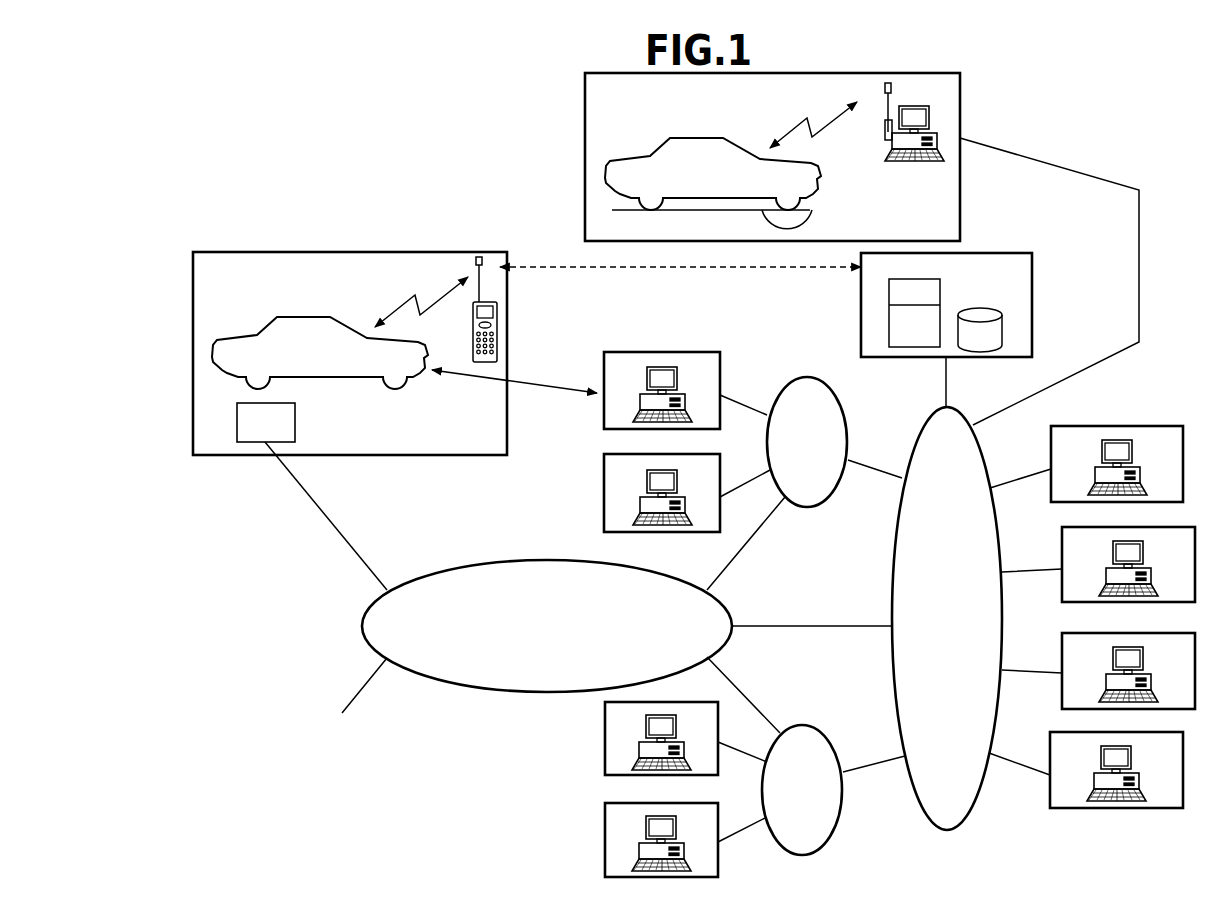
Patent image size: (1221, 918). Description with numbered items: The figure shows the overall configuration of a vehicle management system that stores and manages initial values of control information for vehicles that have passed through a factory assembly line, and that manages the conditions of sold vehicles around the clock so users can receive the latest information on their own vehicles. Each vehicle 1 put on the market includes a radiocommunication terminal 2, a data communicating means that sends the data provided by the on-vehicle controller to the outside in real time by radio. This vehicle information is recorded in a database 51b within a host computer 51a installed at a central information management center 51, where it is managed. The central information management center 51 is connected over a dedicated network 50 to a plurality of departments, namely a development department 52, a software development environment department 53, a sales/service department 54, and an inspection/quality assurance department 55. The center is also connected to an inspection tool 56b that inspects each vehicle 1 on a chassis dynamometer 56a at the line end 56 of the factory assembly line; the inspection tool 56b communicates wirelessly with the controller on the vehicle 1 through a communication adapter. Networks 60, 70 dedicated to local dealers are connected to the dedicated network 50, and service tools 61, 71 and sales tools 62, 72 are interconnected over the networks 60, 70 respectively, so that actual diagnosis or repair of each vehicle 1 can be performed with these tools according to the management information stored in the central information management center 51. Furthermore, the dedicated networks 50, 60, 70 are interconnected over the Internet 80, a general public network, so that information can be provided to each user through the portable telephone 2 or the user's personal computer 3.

The vehicle 1 is at (292, 317).
The radiocommunication terminal 2 is at (473, 330).
The user's personal computer 3 is at (295, 423).
The dedicated network 50 is at (928, 416).
The central information management center 51 is at (1032, 261).
The host computer 51a is at (889, 331).
The database 51b is at (1002, 330).
The development department 52 is at (1051, 440).
The software development environment department 53 is at (1062, 541).
The sales/service department 54 is at (1062, 647).
The inspection/quality assurance department 55 is at (1050, 797).
The line end 56 is at (960, 90).
The chassis dynamometer 56a is at (813, 210).
The inspection tool 56b is at (912, 158).
The network 60 is at (848, 422).
The service tool 61 is at (720, 360).
The sales tool 62 is at (720, 462).
The network 70 is at (843, 826).
The service tool 71 is at (605, 750).
The sales tool 72 is at (605, 852).
The Internet 80 is at (478, 560).